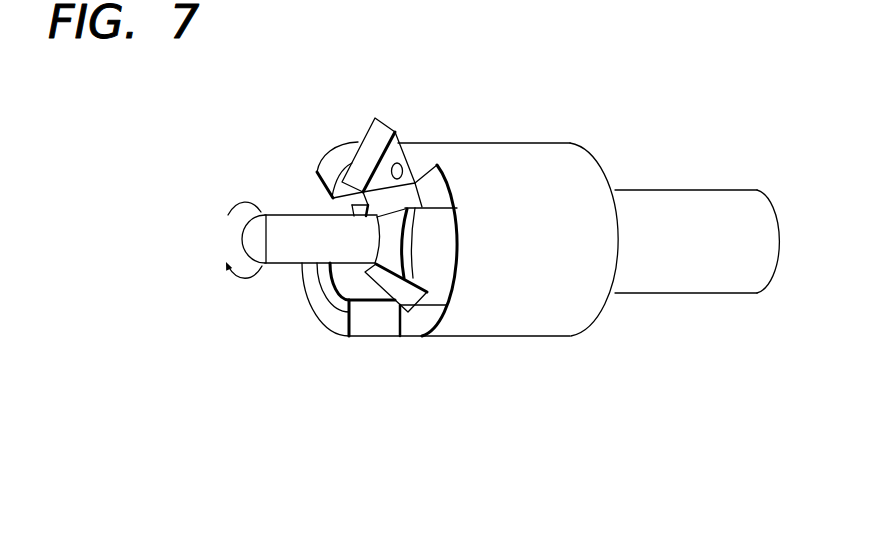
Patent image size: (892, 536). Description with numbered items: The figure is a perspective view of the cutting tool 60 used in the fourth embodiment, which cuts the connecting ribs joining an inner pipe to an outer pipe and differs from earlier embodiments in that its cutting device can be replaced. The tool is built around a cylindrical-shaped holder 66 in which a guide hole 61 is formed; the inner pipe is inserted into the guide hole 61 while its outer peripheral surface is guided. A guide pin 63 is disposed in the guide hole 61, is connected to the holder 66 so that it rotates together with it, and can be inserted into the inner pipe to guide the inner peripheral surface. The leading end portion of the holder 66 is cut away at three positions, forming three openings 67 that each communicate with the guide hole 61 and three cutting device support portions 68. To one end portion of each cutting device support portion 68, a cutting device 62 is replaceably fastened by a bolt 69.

The cutting tool 60 is at (375, 61).
The guide hole 61 is at (358, 273).
The cutting device 62 is at (362, 168).
The guide pin 63 is at (250, 240).
The holder 66 is at (558, 145).
The openings 67 is at (342, 210).
The cutting device support portions 68 is at (335, 157).
The bolt 69 is at (402, 163).